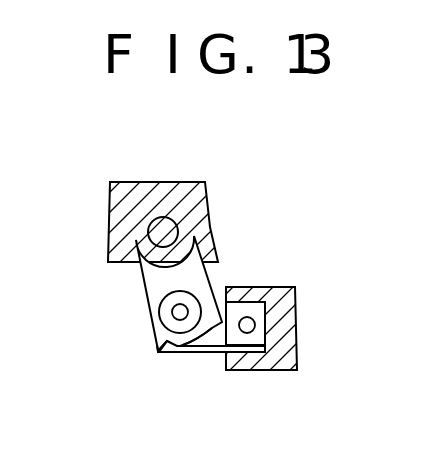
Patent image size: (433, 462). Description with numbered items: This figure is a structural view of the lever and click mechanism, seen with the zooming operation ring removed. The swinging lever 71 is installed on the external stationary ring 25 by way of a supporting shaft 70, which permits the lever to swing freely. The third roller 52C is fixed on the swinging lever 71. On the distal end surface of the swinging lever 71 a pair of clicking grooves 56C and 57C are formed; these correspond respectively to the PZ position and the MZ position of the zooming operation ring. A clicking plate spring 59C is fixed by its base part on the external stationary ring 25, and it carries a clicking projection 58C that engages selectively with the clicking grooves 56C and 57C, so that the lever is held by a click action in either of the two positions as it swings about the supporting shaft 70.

The external stationary ring 25 is at (197, 198).
The supporting shaft 70 is at (158, 232).
The swinging lever 71 is at (195, 275).
The third roller 52C is at (178, 313).
The clicking groove 56C is at (218, 294).
The clicking groove 57C is at (168, 352).
The clicking projection 58C is at (160, 352).
The clicking plate spring 59C is at (205, 352).